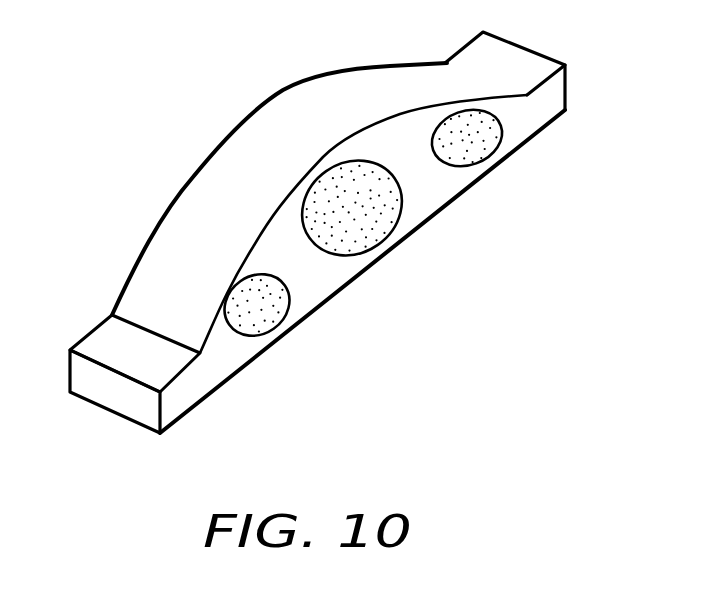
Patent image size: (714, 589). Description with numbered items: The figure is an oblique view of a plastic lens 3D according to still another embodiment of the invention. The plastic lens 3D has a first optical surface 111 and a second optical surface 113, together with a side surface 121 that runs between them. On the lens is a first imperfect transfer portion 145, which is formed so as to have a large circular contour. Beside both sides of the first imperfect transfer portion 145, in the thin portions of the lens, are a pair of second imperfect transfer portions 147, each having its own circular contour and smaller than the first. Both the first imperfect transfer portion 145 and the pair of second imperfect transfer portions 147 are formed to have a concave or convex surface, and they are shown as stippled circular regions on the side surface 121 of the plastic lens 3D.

The plastic lens 3D is at (200, 118).
The first optical surface 111 is at (333, 98).
The second optical surface 113 is at (394, 246).
The side surface 121 is at (317, 287).
The first imperfect transfer portion 145 is at (387, 212).
The second imperfect transfer portions 147 is at (493, 137).